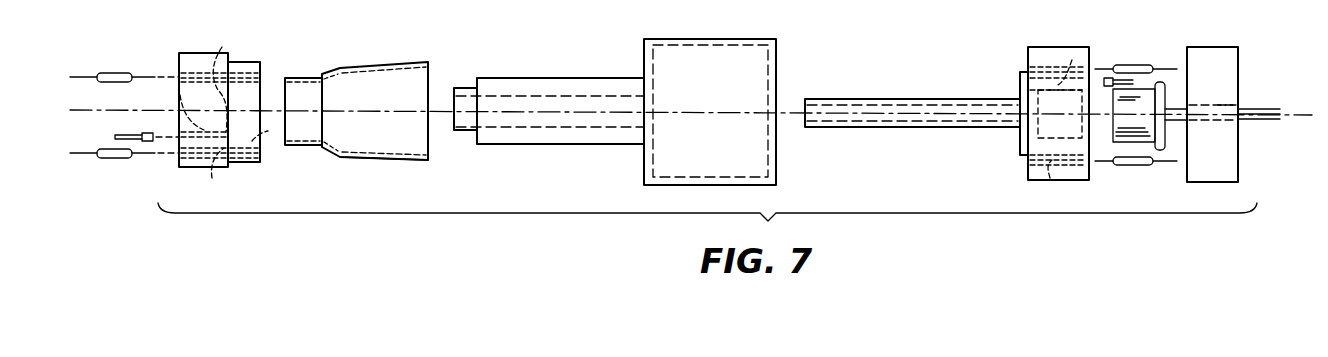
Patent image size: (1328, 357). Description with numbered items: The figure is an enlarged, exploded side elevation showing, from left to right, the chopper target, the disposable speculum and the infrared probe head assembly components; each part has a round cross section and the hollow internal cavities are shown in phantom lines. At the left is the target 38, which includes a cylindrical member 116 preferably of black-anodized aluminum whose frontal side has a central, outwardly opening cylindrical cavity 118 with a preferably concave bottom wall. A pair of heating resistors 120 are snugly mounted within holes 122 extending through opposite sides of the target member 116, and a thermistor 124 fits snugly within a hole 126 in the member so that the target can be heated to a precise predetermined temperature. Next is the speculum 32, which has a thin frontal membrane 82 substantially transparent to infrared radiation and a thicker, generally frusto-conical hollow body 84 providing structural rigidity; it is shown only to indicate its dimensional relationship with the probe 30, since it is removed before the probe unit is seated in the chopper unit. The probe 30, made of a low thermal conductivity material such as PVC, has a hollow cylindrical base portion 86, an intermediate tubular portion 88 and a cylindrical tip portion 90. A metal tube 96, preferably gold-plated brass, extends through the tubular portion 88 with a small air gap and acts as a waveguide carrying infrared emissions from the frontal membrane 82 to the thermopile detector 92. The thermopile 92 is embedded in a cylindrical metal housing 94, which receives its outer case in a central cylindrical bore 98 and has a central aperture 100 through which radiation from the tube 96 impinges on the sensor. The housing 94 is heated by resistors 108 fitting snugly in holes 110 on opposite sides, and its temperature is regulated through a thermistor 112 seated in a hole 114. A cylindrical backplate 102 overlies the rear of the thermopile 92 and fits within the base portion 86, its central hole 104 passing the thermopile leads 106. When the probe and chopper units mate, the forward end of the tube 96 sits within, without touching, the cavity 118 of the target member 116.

The probe 30 is at (567, 77).
The speculum 32 is at (387, 61).
The target 38 is at (207, 51).
The frontal membrane 82 is at (285, 79).
The speculum body 84 is at (400, 161).
The cylindrical base portion 86 is at (736, 39).
The intermediate tubular portion 88 is at (576, 145).
The cylindrical tip portion 90 is at (471, 131).
The thermopile detector 92 is at (1120, 141).
The cylindrical metal housing 94 is at (1049, 47).
The metal tube 96 is at (893, 99).
The central cylindrical bore 98 is at (1020, 150).
The central aperture 100 is at (1012, 90).
The cylindrical backplate 102 is at (1220, 47).
The central hole 104 is at (1228, 100).
The leads 106 is at (1264, 121).
The resistors 108 is at (1135, 65).
The holes 110 is at (1072, 60).
The thermistor 112 is at (1110, 78).
The hole 114 is at (1020, 63).
The cylindrical member 116 is at (240, 168).
The cylindrical cavity 118 is at (268, 145).
The heating resistors 120 is at (114, 72).
The holes 122 is at (222, 47).
The thermistor 124 is at (143, 133).
The hole 126 is at (180, 95).